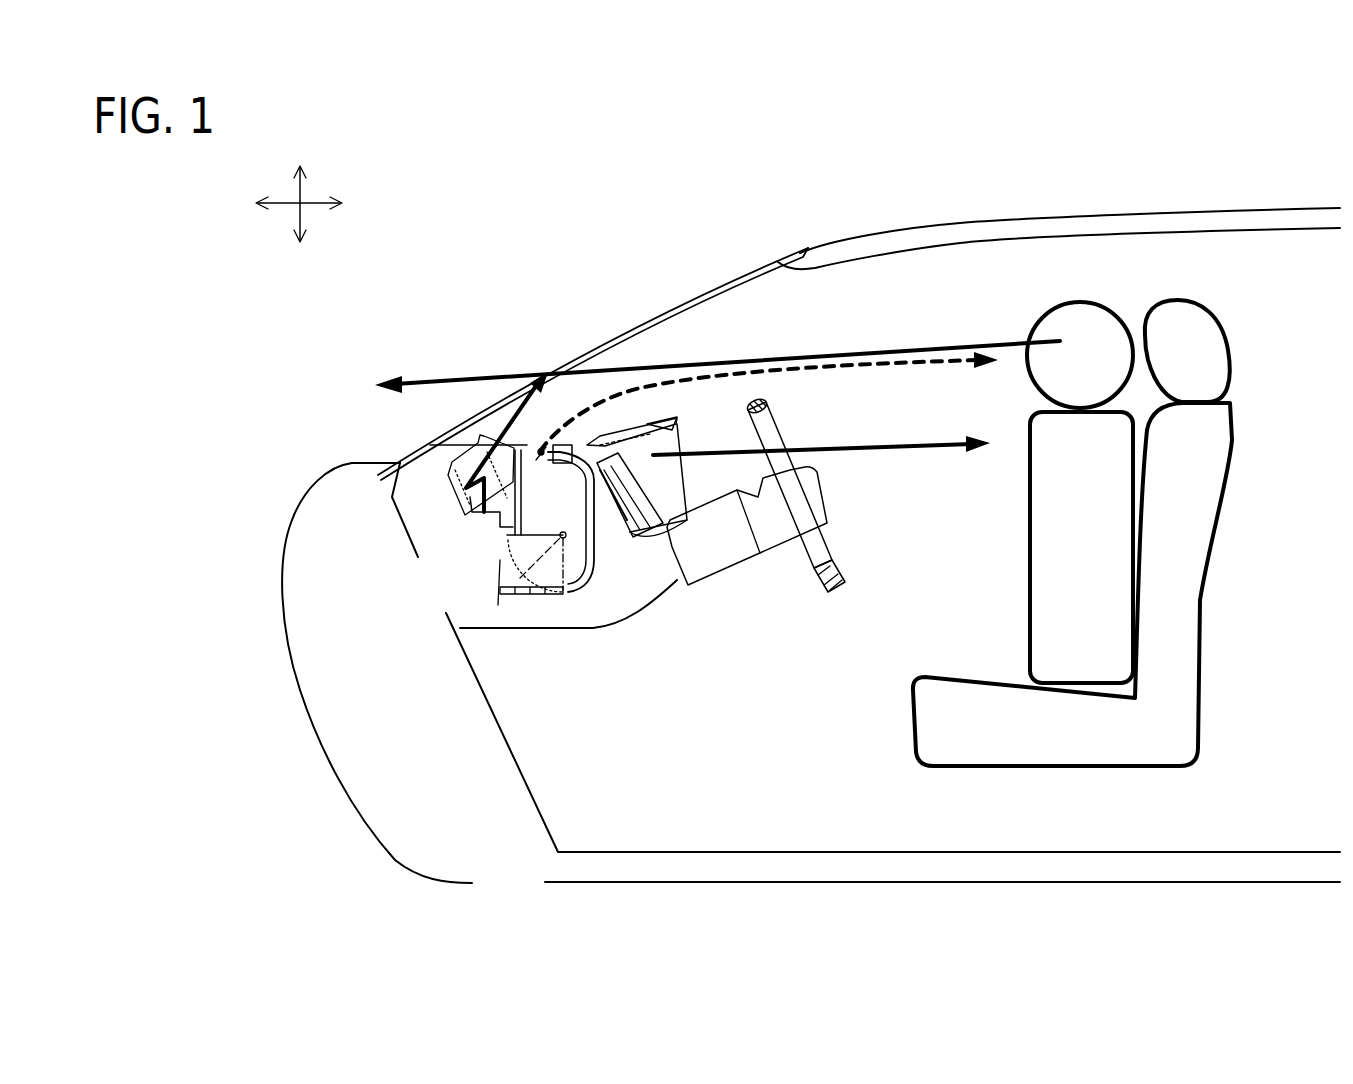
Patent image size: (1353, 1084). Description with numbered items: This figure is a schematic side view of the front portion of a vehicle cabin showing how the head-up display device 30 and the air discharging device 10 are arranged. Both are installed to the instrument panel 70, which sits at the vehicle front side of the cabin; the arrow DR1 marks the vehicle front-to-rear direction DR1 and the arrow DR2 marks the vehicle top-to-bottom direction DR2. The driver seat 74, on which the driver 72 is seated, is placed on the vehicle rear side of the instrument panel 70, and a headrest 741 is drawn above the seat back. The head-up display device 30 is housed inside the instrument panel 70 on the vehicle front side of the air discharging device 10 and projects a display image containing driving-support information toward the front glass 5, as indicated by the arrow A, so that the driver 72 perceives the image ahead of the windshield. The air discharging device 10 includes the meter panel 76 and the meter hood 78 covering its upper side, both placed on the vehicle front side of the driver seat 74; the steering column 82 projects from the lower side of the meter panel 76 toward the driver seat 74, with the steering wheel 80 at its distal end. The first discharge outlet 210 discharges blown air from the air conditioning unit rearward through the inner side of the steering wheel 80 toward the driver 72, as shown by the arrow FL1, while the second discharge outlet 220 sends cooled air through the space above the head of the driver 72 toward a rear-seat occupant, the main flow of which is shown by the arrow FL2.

The front glass 5 is at (650, 318).
The air discharging device 10 is at (600, 432).
The head-up display device 30 is at (443, 468).
The instrument panel 70 is at (457, 447).
The driver 72 is at (1088, 298).
The driver seat 74 is at (1208, 574).
The headrest 741 is at (1203, 343).
The meter panel 76 is at (655, 525).
The meter hood 78 is at (668, 416).
The steering wheel 80 is at (778, 428).
The steering column 82 is at (735, 563).
The first discharge outlet 210 is at (616, 445).
The second discharge outlet 220 is at (546, 440).
The arrow indicating projection of display image A is at (545, 440).
The arrow indicating main flow from first discharge outlet FL1 is at (905, 450).
The arrow indicating main flow from second discharge outlet FL2 is at (922, 360).
The vehicle front-to-rear direction DR1 is at (320, 202).
The vehicle top-to-bottom direction DR2 is at (300, 179).